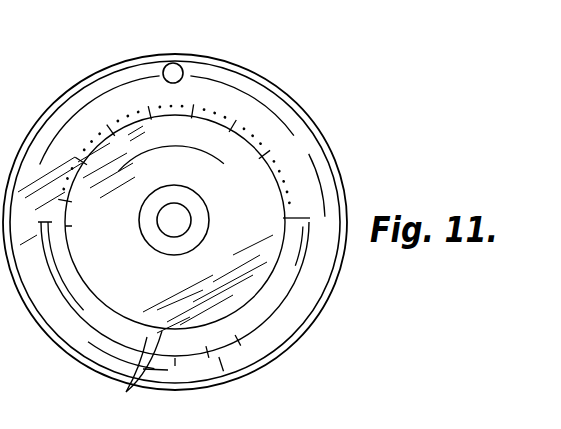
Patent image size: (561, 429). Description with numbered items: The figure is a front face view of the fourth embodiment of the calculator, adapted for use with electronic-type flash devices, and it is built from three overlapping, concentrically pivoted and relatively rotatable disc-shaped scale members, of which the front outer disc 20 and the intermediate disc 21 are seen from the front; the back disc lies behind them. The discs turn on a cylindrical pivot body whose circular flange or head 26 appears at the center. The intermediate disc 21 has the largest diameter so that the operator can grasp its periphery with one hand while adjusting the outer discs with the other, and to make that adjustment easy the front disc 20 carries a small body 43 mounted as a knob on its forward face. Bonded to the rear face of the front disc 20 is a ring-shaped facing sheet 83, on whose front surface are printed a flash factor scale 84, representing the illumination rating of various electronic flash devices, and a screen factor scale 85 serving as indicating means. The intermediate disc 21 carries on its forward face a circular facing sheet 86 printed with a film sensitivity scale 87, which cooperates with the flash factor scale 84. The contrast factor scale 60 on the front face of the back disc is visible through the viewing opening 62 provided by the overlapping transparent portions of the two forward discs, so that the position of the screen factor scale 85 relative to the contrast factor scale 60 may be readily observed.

The front outer disc 20 is at (321, 128).
The intermediate disc 21 is at (308, 105).
The circular flange or head 26 is at (163, 246).
The small body 43 is at (172, 63).
The contrast factor scale 60 is at (258, 311).
The viewing opening 62 is at (127, 390).
The ring-shaped facing sheet 83 is at (98, 369).
The flash factor scale 84 is at (240, 110).
The screen factor scale 85 is at (221, 365).
The circular facing sheet 86 is at (85, 292).
The film sensitivity scale 87 is at (242, 162).